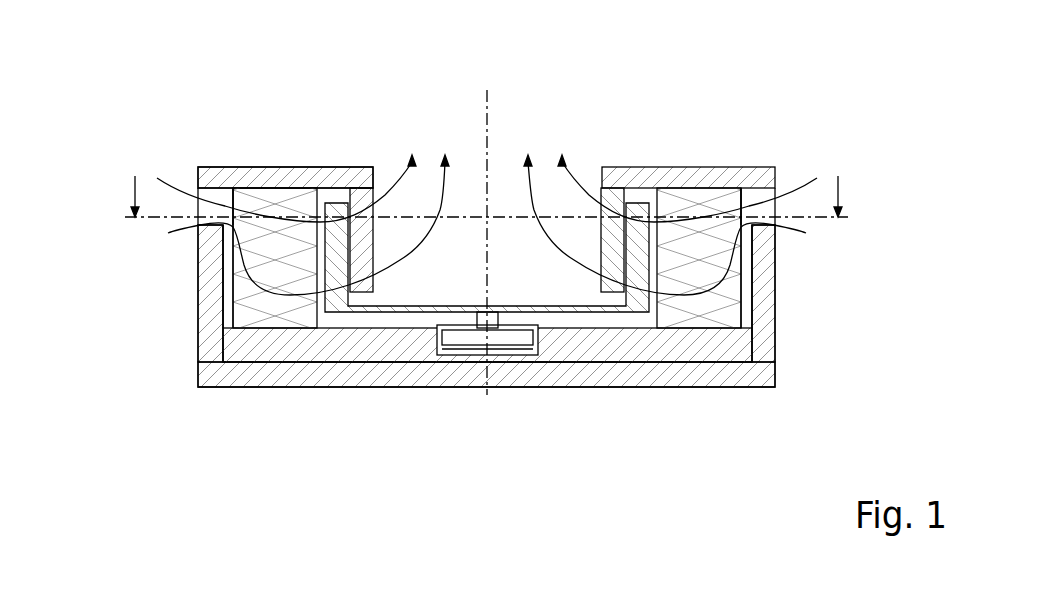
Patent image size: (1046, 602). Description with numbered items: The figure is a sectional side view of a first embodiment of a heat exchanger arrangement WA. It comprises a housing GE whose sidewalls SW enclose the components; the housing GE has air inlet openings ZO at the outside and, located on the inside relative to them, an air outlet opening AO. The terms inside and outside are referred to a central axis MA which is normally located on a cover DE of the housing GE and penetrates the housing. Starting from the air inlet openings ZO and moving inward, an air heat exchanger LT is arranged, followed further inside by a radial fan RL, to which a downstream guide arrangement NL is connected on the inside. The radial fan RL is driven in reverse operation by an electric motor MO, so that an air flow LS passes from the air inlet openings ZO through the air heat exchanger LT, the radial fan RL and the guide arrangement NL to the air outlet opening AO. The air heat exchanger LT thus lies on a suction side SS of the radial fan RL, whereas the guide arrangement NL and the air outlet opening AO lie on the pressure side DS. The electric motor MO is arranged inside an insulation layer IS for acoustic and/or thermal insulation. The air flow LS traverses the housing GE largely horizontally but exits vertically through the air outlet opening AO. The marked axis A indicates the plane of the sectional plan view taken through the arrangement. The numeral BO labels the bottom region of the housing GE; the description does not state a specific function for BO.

The heat exchanger arrangement WA is at (267, 122).
The air inlet openings ZO is at (235, 218).
The radial fan RL is at (338, 203).
The air outlet opening AO is at (463, 187).
The central axis MA is at (487, 105).
The guide arrangement NL is at (602, 203).
The cover DE is at (660, 185).
The axis AA A is at (486, 180).
The air flow LS is at (172, 232).
The sidewalls SW is at (213, 268).
The air heat exchanger LT is at (226, 320).
The suction side SS is at (295, 266).
The pressure side DS is at (510, 261).
The insulation layer IS is at (302, 338).
The housing GE is at (352, 373).
The electric motor MO is at (460, 337).
The bottom BO is at (665, 377).